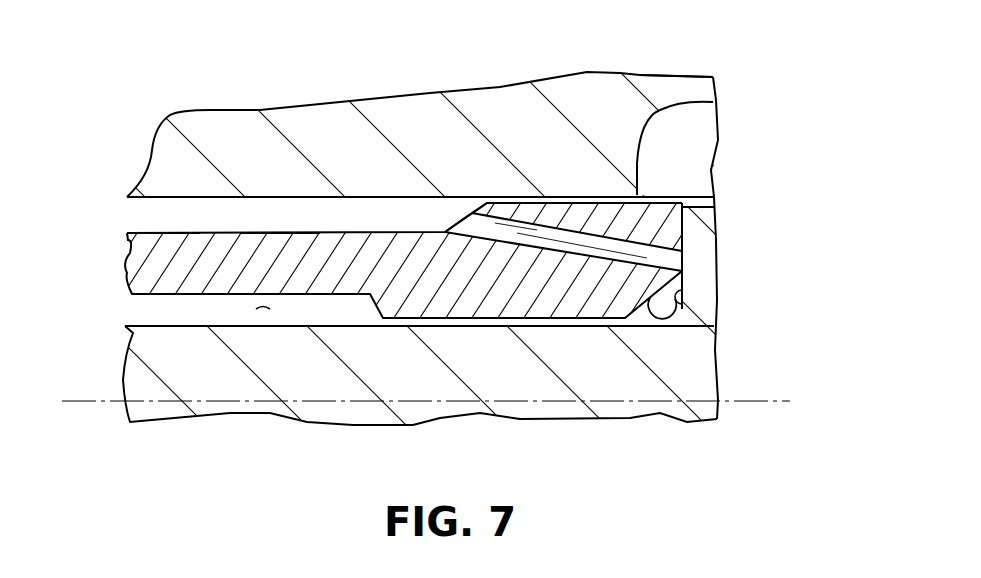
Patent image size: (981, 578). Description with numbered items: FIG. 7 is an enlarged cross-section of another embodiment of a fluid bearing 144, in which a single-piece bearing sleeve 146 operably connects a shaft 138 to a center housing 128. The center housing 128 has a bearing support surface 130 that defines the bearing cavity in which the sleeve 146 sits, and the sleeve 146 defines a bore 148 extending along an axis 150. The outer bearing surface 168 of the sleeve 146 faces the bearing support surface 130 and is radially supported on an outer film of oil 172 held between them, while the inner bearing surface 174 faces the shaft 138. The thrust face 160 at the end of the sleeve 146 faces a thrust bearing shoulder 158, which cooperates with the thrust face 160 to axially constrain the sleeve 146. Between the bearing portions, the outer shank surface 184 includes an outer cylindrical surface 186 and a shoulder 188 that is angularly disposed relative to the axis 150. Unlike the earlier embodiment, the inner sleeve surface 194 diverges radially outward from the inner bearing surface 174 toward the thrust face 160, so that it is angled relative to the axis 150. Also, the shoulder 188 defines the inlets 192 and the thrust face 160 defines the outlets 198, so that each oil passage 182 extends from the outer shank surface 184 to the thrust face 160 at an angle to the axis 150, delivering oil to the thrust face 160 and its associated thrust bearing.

The center housing 128 is at (724, 90).
The bearing support surface 130 is at (200, 198).
The shaft 138 is at (147, 326).
The fluid bearing 144 is at (166, 222).
The single-piece bearing sleeve 146 is at (143, 232).
The bore 148 is at (263, 310).
The axis 150 is at (757, 363).
The thrust bearing shoulder 158 is at (685, 305).
The thrust face 160 is at (682, 238).
The outer bearing surface 168 is at (657, 202).
The outer film of oil 172 is at (670, 196).
The inner bearing surface 174 is at (487, 327).
The oil passage 182 is at (562, 243).
The outer shank surface 184 is at (263, 233).
The outer cylindrical surface 186 is at (288, 233).
The shoulder 188 is at (483, 213).
The inlet 192 is at (467, 220).
The inner sleeve surface 194 is at (678, 321).
The outlet 198 is at (682, 268).